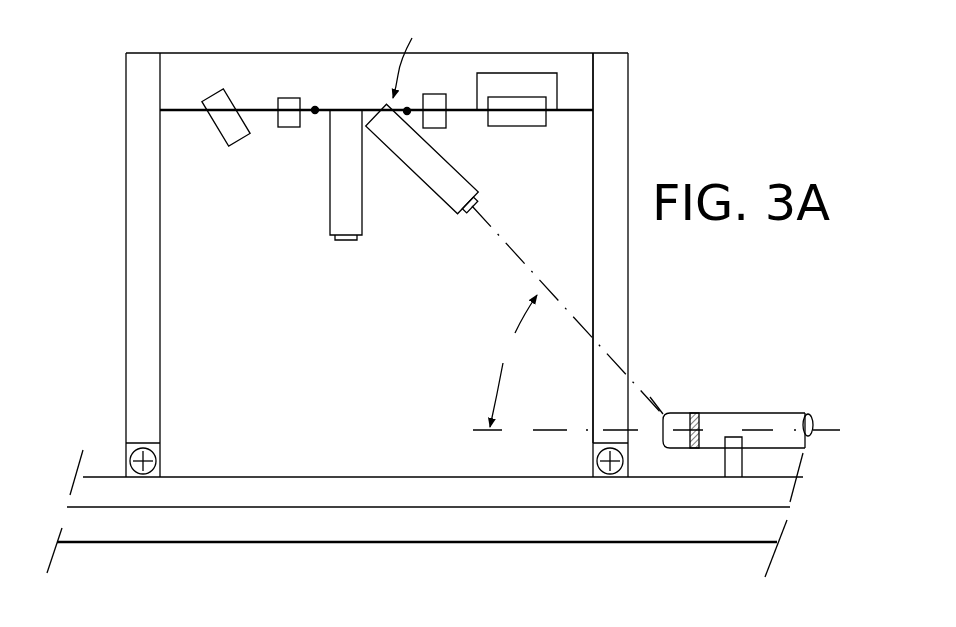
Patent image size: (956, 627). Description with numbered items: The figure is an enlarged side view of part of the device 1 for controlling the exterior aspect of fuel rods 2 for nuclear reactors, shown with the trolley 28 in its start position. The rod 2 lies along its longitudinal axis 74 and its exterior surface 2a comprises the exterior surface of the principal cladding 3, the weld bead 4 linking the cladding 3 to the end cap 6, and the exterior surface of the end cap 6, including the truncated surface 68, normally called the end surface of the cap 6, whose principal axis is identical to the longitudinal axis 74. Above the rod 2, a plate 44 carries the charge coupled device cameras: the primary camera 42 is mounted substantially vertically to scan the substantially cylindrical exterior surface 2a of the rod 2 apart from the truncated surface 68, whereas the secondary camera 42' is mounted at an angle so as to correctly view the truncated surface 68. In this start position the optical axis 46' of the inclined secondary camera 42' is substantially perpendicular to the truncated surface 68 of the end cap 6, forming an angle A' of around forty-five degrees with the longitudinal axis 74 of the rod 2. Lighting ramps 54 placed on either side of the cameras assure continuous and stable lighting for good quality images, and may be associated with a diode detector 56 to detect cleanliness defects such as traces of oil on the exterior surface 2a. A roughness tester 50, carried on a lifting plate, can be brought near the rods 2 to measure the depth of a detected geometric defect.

The device for controlling the exterior aspect of fuel rods 1 is at (100, 98).
The trolley 28 is at (640, 122).
The plate 44 is at (317, 108).
The lighting ramp 54 is at (292, 120).
The diode detector 56 is at (220, 127).
The primary camera 42 is at (309, 175).
The secondary camera 42' is at (424, 144).
The optical axis of secondary camera 46' is at (550, 310).
The roughness tester 50 is at (517, 120).
The angle A' is at (506, 361).
The longitudinal axis of the rod 74 is at (822, 432).
The truncated surface of the end cap 68 is at (663, 413).
The fuel rod 2 is at (732, 412).
The principal cladding 3 is at (730, 420).
The weld bead 4 is at (693, 413).
The exterior surface 2a is at (800, 415).
The end cap 6 is at (677, 445).